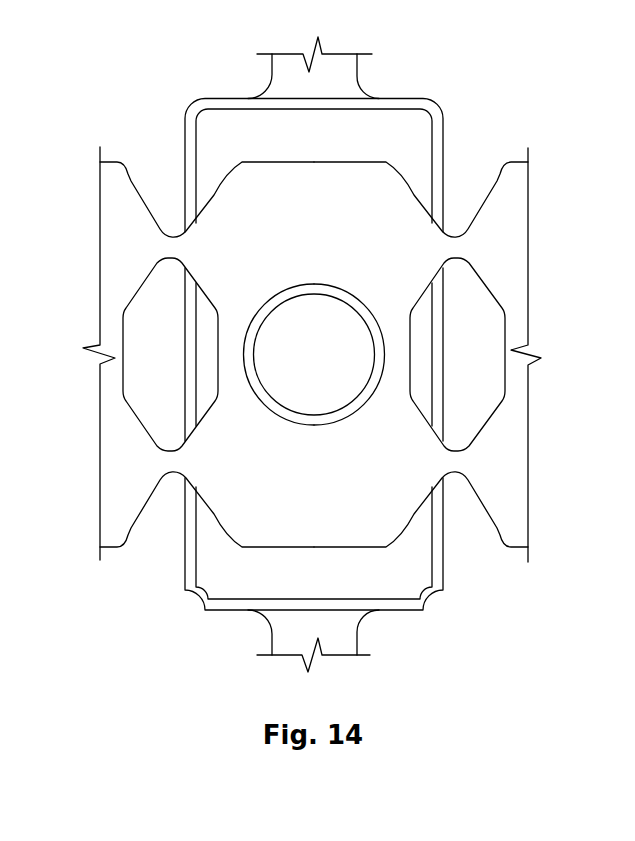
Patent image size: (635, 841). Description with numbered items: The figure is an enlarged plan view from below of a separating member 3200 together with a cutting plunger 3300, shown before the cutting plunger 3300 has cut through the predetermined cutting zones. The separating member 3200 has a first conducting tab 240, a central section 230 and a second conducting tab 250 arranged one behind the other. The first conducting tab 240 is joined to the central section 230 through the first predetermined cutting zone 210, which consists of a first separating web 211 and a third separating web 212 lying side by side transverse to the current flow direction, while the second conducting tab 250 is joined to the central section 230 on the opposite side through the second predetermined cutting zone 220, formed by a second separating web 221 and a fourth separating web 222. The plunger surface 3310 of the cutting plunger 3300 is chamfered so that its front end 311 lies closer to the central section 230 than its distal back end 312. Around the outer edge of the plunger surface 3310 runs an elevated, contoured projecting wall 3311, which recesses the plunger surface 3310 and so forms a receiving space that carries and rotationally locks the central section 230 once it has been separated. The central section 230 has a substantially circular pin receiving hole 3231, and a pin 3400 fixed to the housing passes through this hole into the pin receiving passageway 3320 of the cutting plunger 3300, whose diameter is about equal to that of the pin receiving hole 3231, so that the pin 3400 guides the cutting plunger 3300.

The cutting plunger 3300 is at (389, 124).
The projecting wall 3311 is at (205, 101).
The front end 311 is at (420, 122).
The back end 312 is at (420, 557).
The central section 230 is at (237, 536).
The plunger surface 3310 is at (402, 585).
The second predetermined cutting zone 220 is at (175, 214).
The first predetermined cutting zone 210 is at (458, 216).
The fourth separating web 222 is at (172, 460).
The third separating web 212 is at (453, 462).
The second separating web 221 is at (160, 250).
The separating member 3200 is at (510, 234).
The second conducting tab 250 is at (120, 382).
The first conducting tab 240 is at (510, 272).
The first separating web 211 is at (454, 256).
The pin 3400 is at (292, 346).
The pin receiving passageway 3320 is at (373, 378).
The pin receiving hole 3231 is at (357, 410).